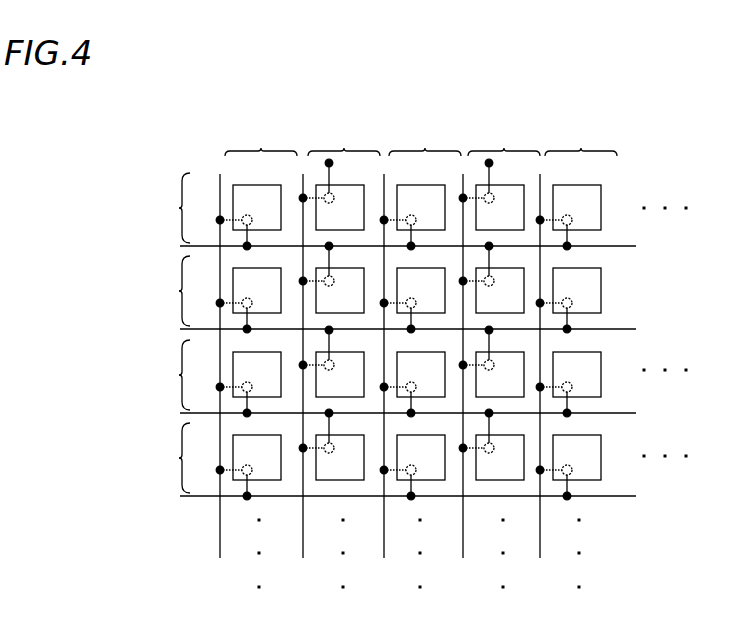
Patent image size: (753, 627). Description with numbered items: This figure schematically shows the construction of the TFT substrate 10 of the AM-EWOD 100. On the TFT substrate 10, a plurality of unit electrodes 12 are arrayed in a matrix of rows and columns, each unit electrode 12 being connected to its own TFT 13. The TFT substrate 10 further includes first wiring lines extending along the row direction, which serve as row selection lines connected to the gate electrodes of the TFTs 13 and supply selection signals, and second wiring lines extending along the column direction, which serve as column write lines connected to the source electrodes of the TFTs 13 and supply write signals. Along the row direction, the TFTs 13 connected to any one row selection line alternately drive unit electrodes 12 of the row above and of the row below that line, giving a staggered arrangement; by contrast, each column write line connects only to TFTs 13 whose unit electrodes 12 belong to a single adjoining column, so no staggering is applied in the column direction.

The AM-EWOD 100 is at (683, 156).
The TFT substrate 10 is at (627, 182).
The unit electrode 12 is at (588, 290).
The TFT 13 is at (573, 305).